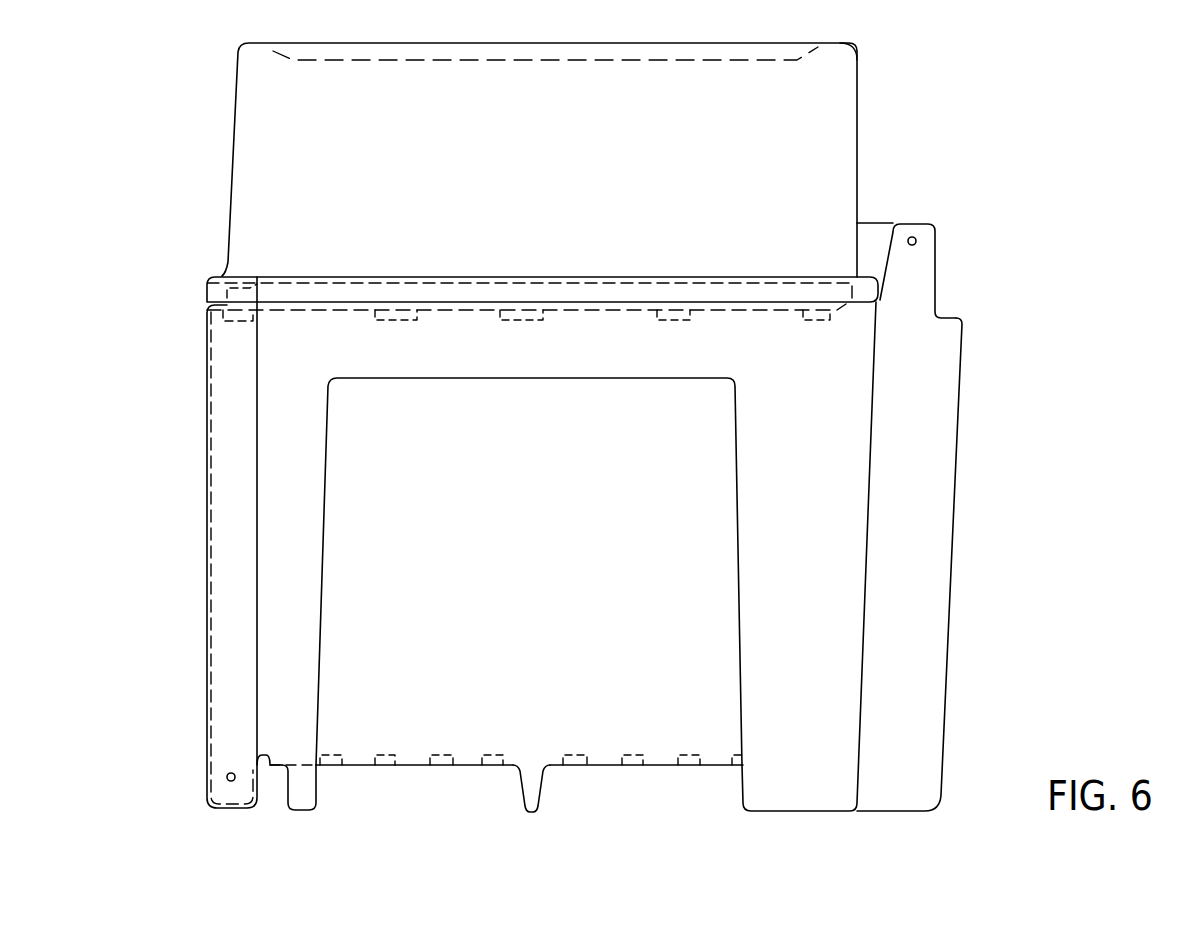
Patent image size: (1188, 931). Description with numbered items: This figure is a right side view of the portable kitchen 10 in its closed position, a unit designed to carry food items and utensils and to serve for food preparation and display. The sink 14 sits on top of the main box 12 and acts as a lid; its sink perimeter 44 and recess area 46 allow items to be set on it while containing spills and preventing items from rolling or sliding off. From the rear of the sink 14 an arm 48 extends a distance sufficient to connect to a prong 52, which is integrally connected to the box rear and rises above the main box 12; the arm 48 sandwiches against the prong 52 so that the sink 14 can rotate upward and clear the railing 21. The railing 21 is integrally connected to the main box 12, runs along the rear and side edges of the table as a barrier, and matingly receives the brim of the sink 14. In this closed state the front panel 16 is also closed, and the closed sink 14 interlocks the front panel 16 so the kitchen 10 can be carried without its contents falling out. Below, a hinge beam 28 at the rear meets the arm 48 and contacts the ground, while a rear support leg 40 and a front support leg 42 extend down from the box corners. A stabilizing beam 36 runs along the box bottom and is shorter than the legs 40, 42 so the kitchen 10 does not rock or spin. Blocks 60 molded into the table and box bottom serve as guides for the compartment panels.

The portable kitchen 10 is at (1020, 385).
The main box 12 is at (160, 391).
The sink 14 is at (220, 153).
The front panel 16 is at (218, 510).
The railing 21 is at (820, 278).
The hinge beam 28 is at (890, 790).
The stabilizing beam 36 is at (539, 797).
The rear support leg 40 is at (795, 790).
The front support leg 42 is at (304, 803).
The sink perimeter 44 is at (833, 65).
The recess area 46 is at (710, 52).
The arm 48 is at (868, 232).
The prong 52 is at (928, 258).
The block 60 is at (391, 326).